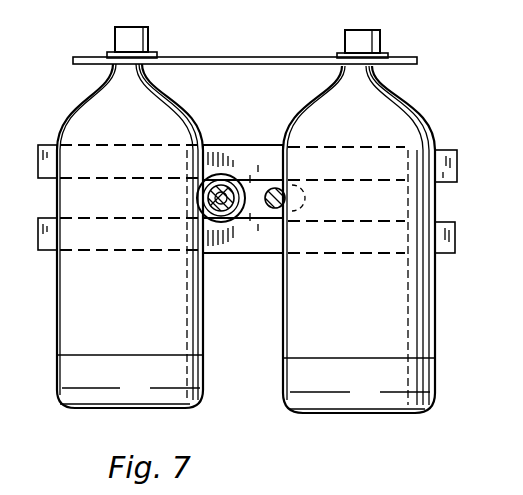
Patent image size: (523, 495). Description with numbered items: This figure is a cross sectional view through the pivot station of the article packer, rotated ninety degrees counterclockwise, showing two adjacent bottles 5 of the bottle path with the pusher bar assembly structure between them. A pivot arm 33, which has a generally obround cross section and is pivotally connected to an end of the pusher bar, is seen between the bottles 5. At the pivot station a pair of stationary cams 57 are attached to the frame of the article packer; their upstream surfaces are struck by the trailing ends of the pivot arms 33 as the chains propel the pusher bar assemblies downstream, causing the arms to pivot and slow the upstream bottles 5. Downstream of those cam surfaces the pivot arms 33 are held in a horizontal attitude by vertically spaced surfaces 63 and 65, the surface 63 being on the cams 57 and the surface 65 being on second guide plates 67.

The bottle 5 is at (297, 293).
The pivot arm 33 is at (255, 185).
The stationary cam 57 is at (447, 150).
The surface 63 is at (444, 188).
The surface 65 is at (446, 222).
The second guide plate 67 is at (446, 255).